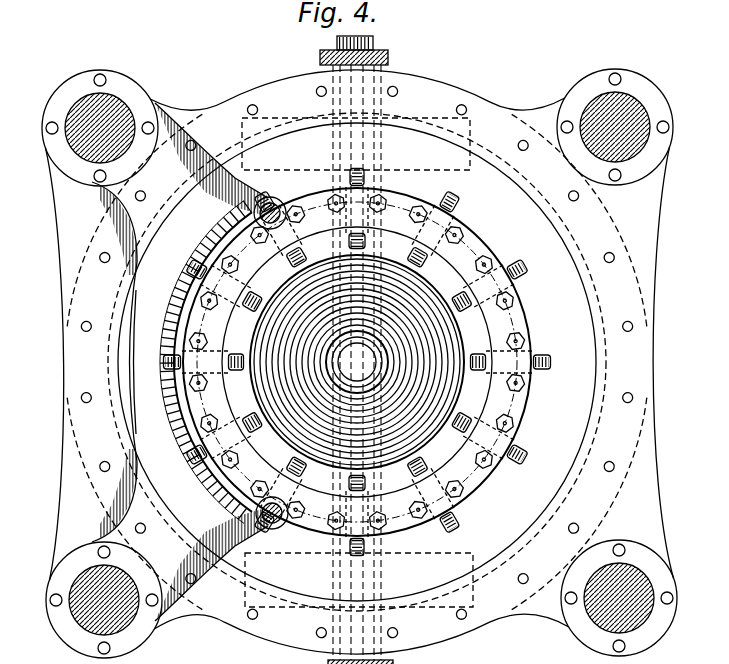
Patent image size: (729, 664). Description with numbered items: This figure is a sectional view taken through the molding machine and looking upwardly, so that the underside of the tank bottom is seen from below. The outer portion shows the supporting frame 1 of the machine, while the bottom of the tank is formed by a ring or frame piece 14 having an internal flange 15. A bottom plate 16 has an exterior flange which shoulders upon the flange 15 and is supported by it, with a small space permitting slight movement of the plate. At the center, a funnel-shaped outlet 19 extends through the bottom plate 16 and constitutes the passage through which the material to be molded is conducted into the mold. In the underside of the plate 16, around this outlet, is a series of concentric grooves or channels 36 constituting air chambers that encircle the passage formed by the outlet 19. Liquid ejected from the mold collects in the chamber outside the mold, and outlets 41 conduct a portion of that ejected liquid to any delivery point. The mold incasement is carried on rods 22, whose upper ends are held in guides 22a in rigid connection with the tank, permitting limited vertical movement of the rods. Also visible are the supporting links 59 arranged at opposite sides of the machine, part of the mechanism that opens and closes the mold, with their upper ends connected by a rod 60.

The supporting frame 1 is at (88, 133).
The ring or frame piece 14 is at (632, 356).
The internal flange 15 is at (598, 383).
The bottom plate 16 is at (376, 362).
The funnel-shaped outlet 19 is at (357, 362).
The rods 22 is at (282, 200).
The guides 22a is at (239, 370).
The concentric grooves or channels 36 is at (300, 343).
The outlets 41 is at (190, 450).
The supporting links 59 is at (390, 55).
The rod 60 is at (375, 43).